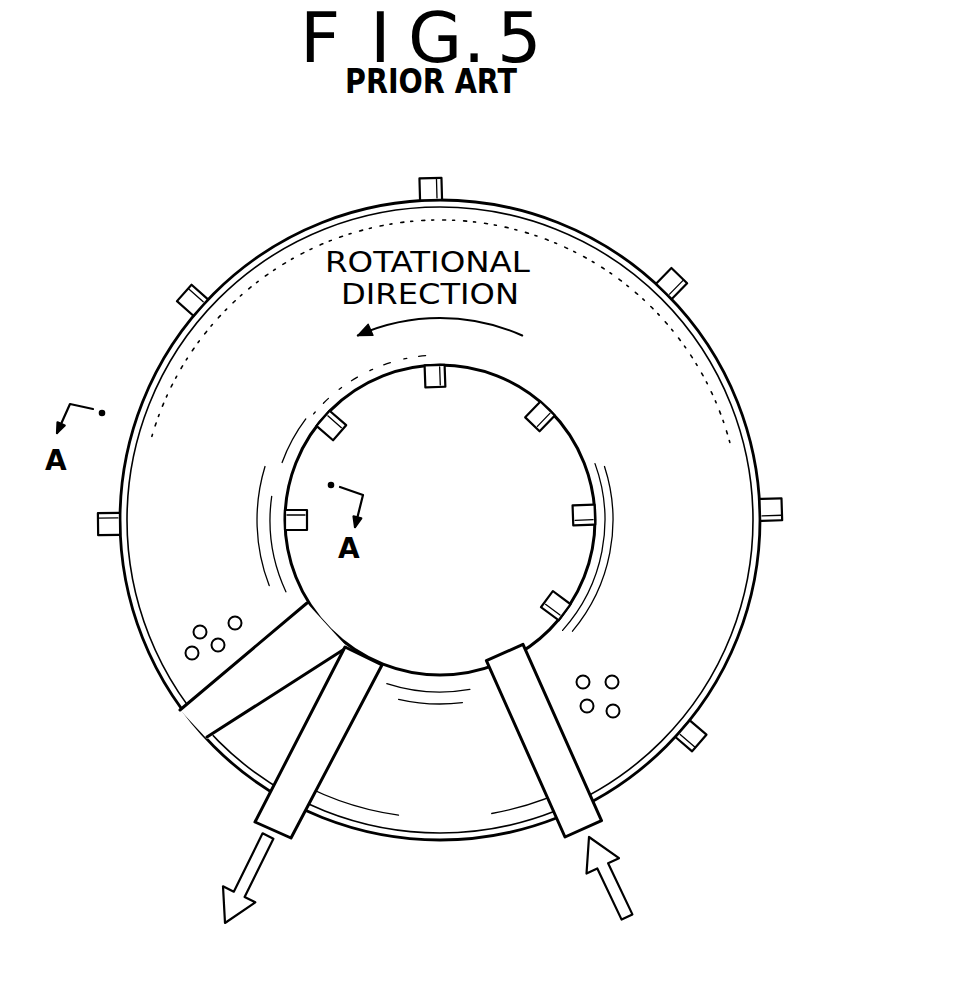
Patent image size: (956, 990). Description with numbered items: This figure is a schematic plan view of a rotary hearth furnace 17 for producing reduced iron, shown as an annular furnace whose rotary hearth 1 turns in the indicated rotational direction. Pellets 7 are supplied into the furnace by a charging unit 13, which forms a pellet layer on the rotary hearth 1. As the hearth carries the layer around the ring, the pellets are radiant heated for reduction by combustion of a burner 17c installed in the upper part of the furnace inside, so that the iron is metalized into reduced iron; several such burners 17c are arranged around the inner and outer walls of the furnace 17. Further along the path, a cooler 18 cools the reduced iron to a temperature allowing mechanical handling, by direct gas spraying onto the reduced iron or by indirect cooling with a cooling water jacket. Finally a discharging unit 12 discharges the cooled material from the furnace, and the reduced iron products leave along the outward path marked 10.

The rotary hearth 1 is at (476, 800).
The pellets 7 is at (616, 900).
The outgoing transfer direction 10 is at (236, 901).
The discharging unit 12 is at (277, 800).
The charging unit 13 is at (587, 812).
The rotary hearth furnace 17 is at (745, 422).
The burner 17c is at (783, 522).
The cooler 18 is at (203, 722).